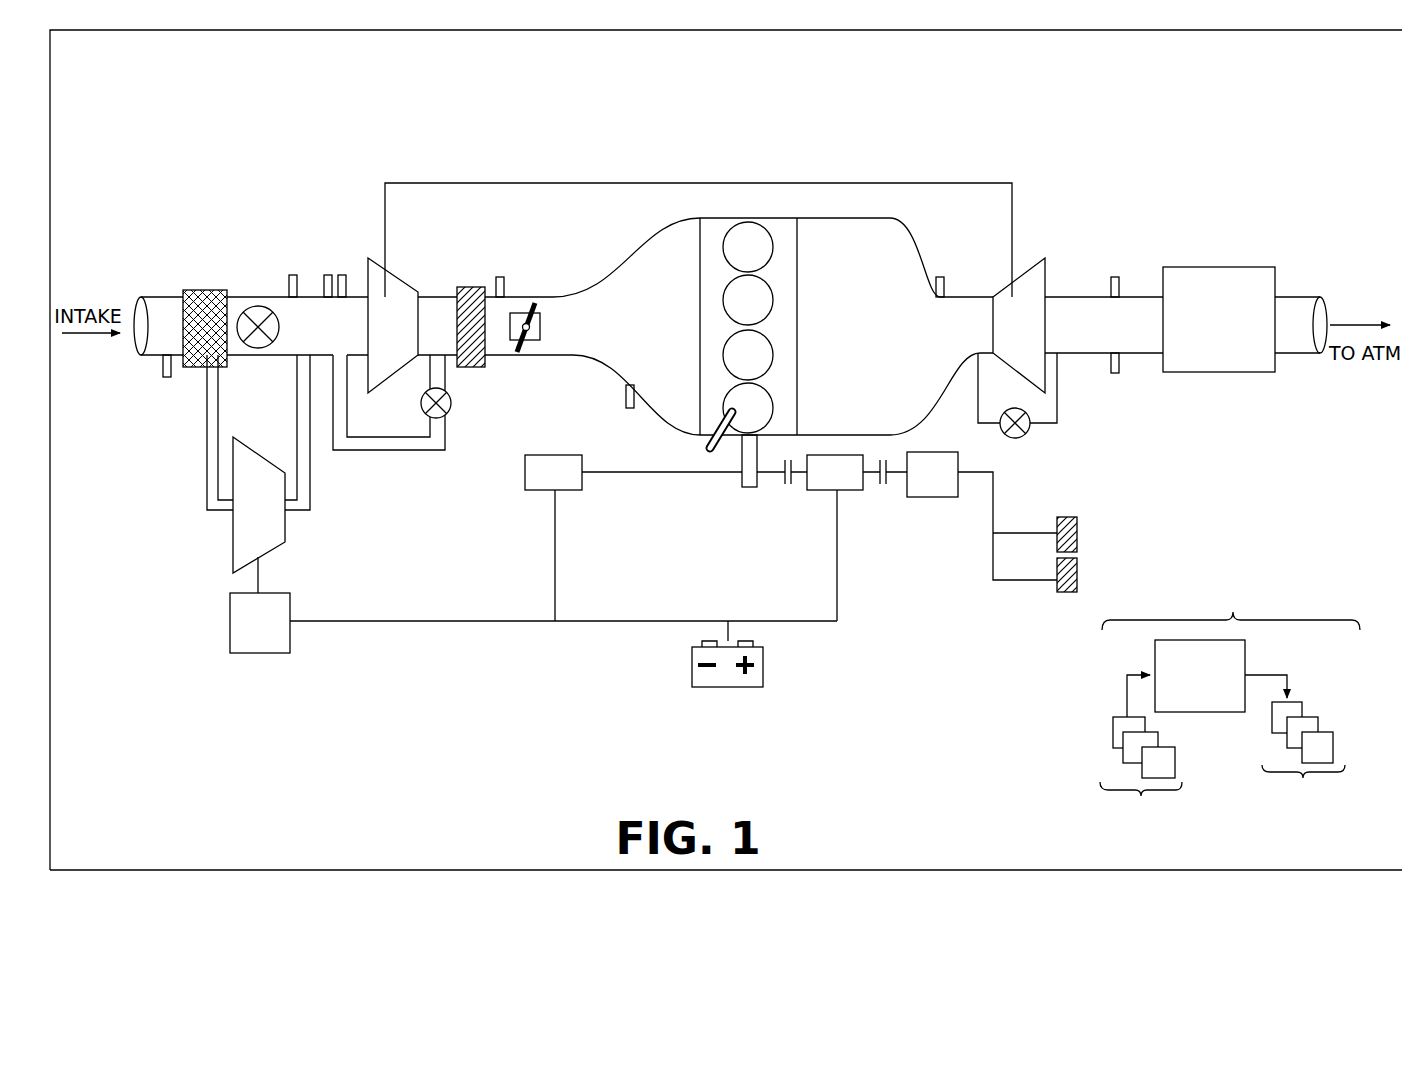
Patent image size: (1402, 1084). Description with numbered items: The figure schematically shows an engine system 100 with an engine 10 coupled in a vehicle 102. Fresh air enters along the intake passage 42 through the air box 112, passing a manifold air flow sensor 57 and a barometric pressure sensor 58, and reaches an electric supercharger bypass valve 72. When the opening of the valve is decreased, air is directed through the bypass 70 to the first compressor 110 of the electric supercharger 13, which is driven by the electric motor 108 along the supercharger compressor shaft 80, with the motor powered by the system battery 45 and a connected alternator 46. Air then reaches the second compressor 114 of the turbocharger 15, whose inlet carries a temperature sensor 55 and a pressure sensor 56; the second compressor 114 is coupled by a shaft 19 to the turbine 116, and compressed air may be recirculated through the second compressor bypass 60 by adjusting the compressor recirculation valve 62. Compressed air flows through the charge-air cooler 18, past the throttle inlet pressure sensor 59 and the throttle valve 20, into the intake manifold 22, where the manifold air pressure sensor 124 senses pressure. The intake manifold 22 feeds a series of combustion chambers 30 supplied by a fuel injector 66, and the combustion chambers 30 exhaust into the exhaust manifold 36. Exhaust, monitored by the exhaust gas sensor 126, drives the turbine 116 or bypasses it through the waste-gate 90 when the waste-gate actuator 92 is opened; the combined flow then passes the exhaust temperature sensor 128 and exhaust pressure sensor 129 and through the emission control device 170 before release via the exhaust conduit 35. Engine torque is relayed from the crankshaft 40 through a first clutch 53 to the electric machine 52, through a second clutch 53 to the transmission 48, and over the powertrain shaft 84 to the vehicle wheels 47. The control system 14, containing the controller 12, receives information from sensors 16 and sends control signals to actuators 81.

The engine 10 is at (797, 305).
The controller 12 is at (1200, 676).
The electric supercharger 13 is at (205, 574).
The control system 14 is at (1230, 704).
The turbocharger 15 is at (433, 224).
The sensors 16 is at (1141, 758).
The charge-air cooler 18 is at (470, 287).
The shaft 19 is at (905, 183).
The throttle valve 20 is at (540, 334).
The intake manifold 22 is at (592, 326).
The combustion chambers 30 is at (770, 238).
The exhaust conduit 35 is at (1296, 297).
The exhaust manifold 36 is at (924, 325).
The crankshaft 40 is at (742, 480).
The intake passage 42 is at (148, 356).
The system battery 45 is at (728, 687).
The alternator 46 is at (522, 488).
The vehicle wheels 47 is at (1057, 520).
The transmission 48 is at (932, 474).
The electric machine 52 is at (822, 492).
The clutch 53 is at (786, 486).
The temperature sensor 55 is at (328, 275).
The pressure sensor 56 is at (342, 275).
The manifold air flow sensor 57 is at (293, 275).
The barometric pressure sensor 58 is at (167, 377).
The throttle inlet pressure sensor 59 is at (500, 277).
The second compressor bypass 60 is at (400, 437).
The compressor recirculation valve 62 is at (447, 408).
The fuel injector 66 is at (708, 446).
The bypass 70 is at (207, 485).
The electric supercharger bypass valve 72 is at (258, 306).
The supercharger compressor shaft 80 is at (260, 565).
The actuators 81 is at (1295, 750).
The powertrain shaft 84 is at (968, 474).
The waste-gate 90 is at (978, 405).
The waste-gate actuator 92 is at (1020, 438).
The engine system 100 is at (1062, 190).
The vehicle 102 is at (1320, 31).
The electric motor 108 is at (260, 623).
The first compressor 110 is at (259, 505).
The air box 112 is at (198, 290).
The second compressor 114 is at (393, 325).
The turbine 116 is at (1019, 325).
The manifold air pressure sensor 124 is at (626, 398).
The exhaust gas sensor 126 is at (940, 277).
The exhaust temperature sensor 128 is at (1115, 373).
The exhaust pressure sensor 129 is at (1115, 277).
The emission control device 170 is at (1196, 267).